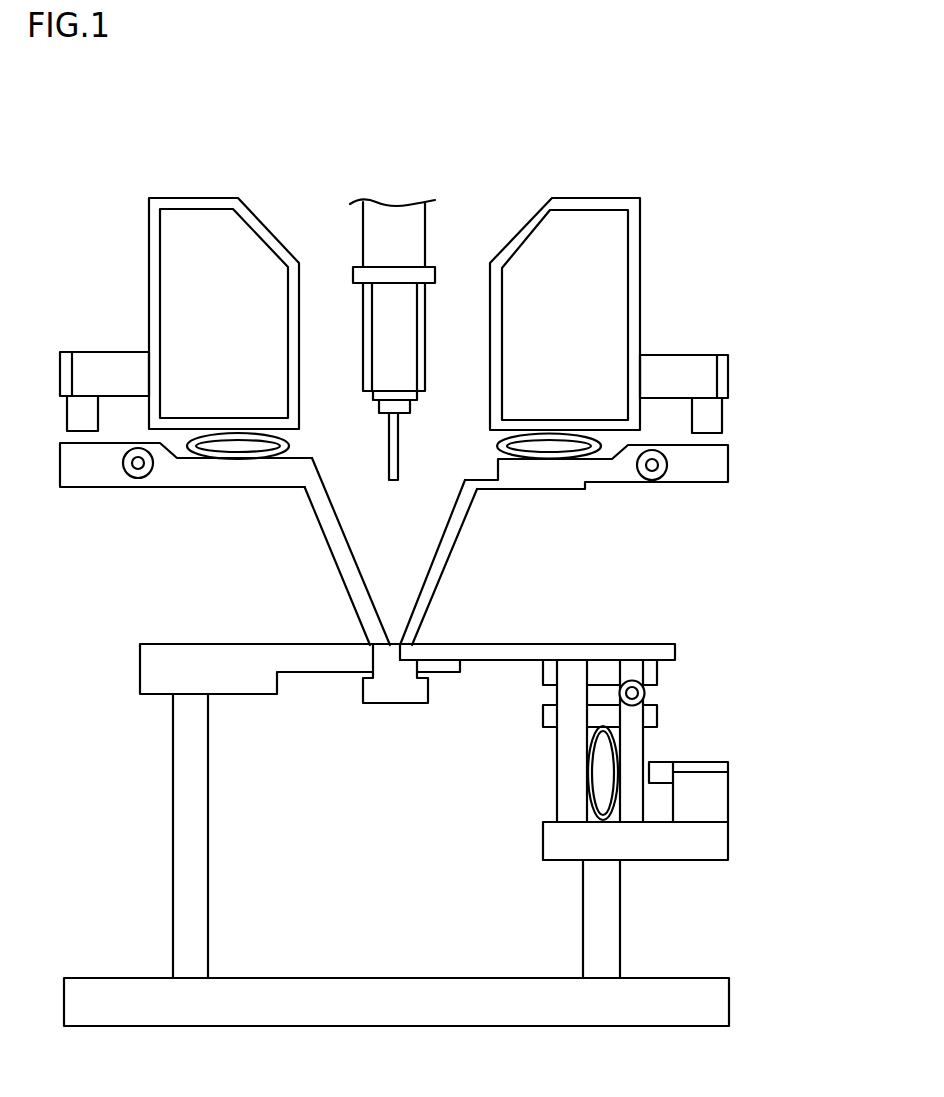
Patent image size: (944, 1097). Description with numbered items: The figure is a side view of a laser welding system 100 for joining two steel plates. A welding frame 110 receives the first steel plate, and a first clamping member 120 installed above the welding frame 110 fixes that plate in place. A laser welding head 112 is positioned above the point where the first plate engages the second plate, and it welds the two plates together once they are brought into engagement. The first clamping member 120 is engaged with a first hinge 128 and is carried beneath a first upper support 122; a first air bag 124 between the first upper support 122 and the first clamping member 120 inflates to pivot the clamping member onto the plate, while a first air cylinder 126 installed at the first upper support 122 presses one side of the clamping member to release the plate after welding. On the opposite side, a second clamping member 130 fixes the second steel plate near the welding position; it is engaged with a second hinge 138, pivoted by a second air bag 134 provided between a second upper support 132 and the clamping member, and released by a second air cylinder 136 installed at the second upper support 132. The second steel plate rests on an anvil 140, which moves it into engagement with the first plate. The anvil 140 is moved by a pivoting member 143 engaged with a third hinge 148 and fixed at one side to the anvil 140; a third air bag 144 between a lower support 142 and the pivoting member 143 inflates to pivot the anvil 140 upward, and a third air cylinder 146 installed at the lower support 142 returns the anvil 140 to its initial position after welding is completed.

The laser welding system 100 is at (393, 73).
The welding frame 110 is at (155, 665).
The laser welding head 112 is at (415, 230).
The first clamping member 120 is at (181, 478).
The first upper support 122 is at (217, 192).
The first air bag 124 is at (240, 460).
The first air cylinder 126 is at (98, 342).
The first hinge 128 is at (124, 472).
The second clamping member 130 is at (438, 577).
The second upper support 132 is at (577, 185).
The second air bag 134 is at (550, 460).
The second air cylinder 136 is at (695, 342).
The second hinge 138 is at (657, 480).
The anvil 140 is at (638, 722).
The lower support 142 is at (587, 933).
The pivoting member 143 is at (640, 737).
The third air bag 144 is at (587, 772).
The third air cylinder 146 is at (720, 797).
The third hinge 148 is at (645, 695).